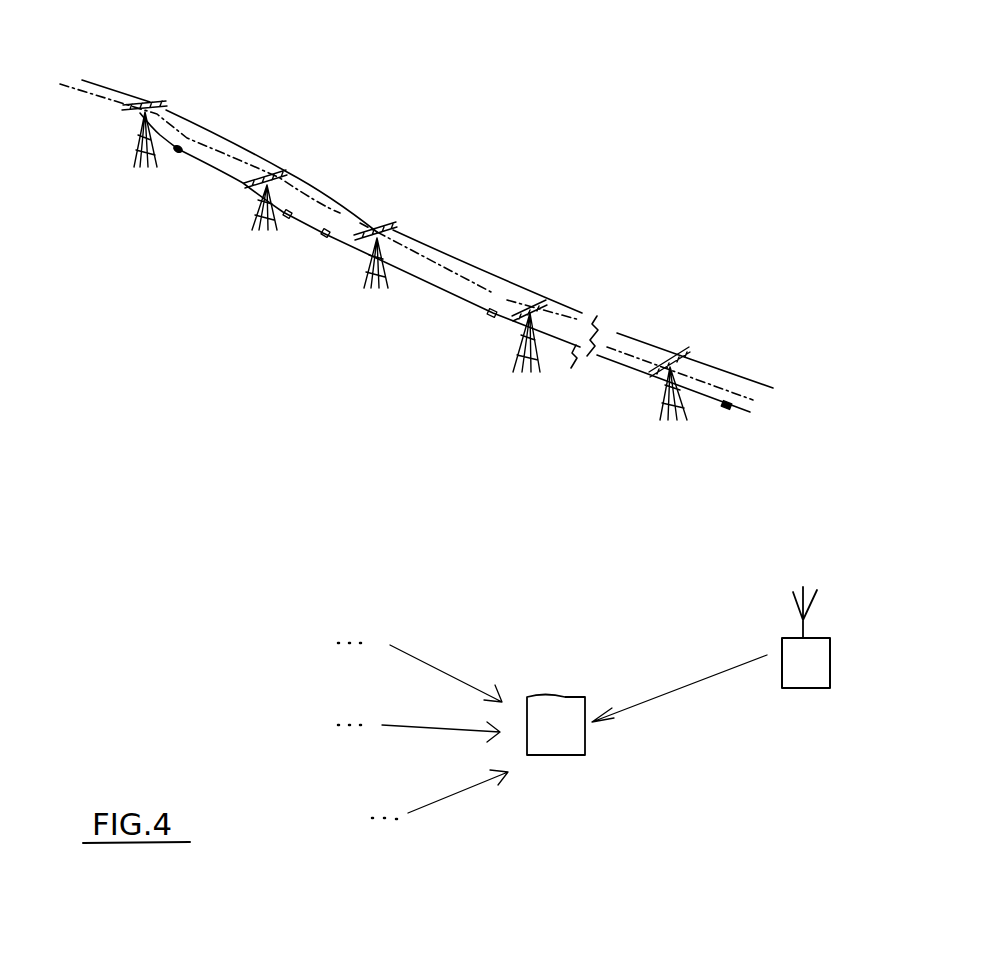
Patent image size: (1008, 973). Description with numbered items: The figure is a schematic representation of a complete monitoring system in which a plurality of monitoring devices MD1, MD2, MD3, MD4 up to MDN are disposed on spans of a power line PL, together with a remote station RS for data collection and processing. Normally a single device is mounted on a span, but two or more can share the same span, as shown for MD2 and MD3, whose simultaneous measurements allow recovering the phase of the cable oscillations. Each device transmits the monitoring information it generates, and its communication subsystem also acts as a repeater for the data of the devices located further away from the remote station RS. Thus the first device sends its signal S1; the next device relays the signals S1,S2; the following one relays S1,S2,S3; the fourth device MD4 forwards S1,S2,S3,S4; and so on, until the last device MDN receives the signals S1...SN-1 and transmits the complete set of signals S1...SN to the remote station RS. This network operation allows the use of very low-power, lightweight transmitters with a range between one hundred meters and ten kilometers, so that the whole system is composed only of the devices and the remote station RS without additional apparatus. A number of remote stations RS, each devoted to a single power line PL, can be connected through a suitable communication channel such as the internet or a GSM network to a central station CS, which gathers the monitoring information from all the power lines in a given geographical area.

The power line PL is at (152, 80).
The monitoring device MD1 is at (176, 153).
The monitoring device MD2 is at (287, 218).
The monitoring device MD3 is at (325, 237).
The monitoring device MD4 is at (488, 316).
The monitoring device MDN is at (722, 410).
The monitoring information signal S1 is at (295, 188).
The relayed monitoring signals S1,S2 is at (346, 212).
The relayed monitoring signals S1,S2,S3 is at (497, 297).
The relayed monitoring signals S1,S2,S3,S4 is at (510, 287).
The relayed monitoring signals S1...SN-1 is at (728, 383).
The monitoring signals S1...SN is at (783, 567).
The remote station RS is at (813, 633).
The central station CS is at (563, 697).